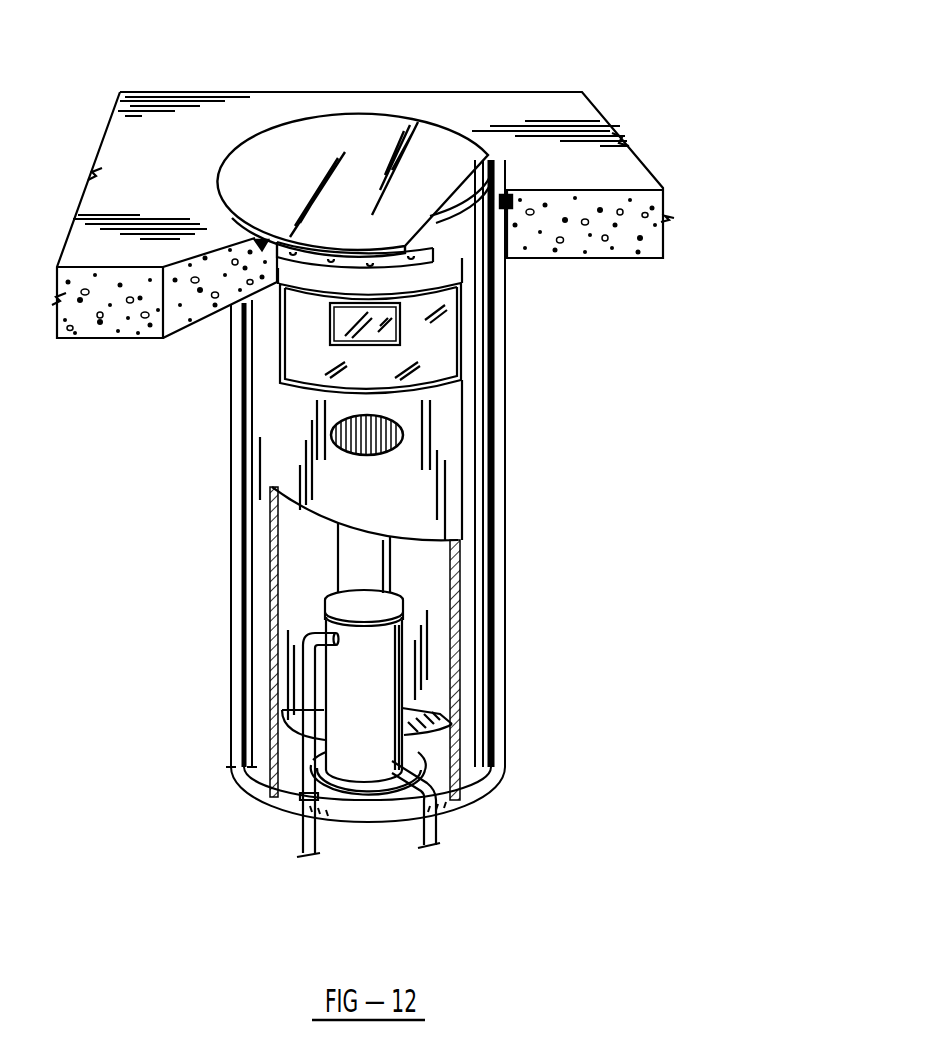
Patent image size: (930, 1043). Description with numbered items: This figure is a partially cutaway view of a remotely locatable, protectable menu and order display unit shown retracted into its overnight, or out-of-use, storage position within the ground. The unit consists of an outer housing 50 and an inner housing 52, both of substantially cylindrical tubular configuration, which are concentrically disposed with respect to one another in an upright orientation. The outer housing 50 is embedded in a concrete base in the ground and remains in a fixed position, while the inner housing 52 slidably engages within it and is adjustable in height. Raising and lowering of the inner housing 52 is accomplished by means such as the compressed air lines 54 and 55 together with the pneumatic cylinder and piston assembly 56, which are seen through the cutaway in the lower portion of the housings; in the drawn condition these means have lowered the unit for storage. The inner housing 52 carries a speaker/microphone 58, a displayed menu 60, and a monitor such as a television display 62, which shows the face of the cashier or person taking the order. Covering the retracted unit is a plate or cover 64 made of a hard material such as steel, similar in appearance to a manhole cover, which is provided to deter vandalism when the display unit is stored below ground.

The outer housing 50 is at (502, 600).
The inner housing 52 is at (455, 515).
The compressed air line 54 is at (303, 827).
The compressed air line 55 is at (430, 827).
The pneumatic cylinder and piston assembly 56 is at (353, 660).
The speaker/microphone 58 is at (403, 433).
The menu 60 is at (443, 350).
The television display 62 is at (340, 340).
The plate or cover 64 is at (445, 138).